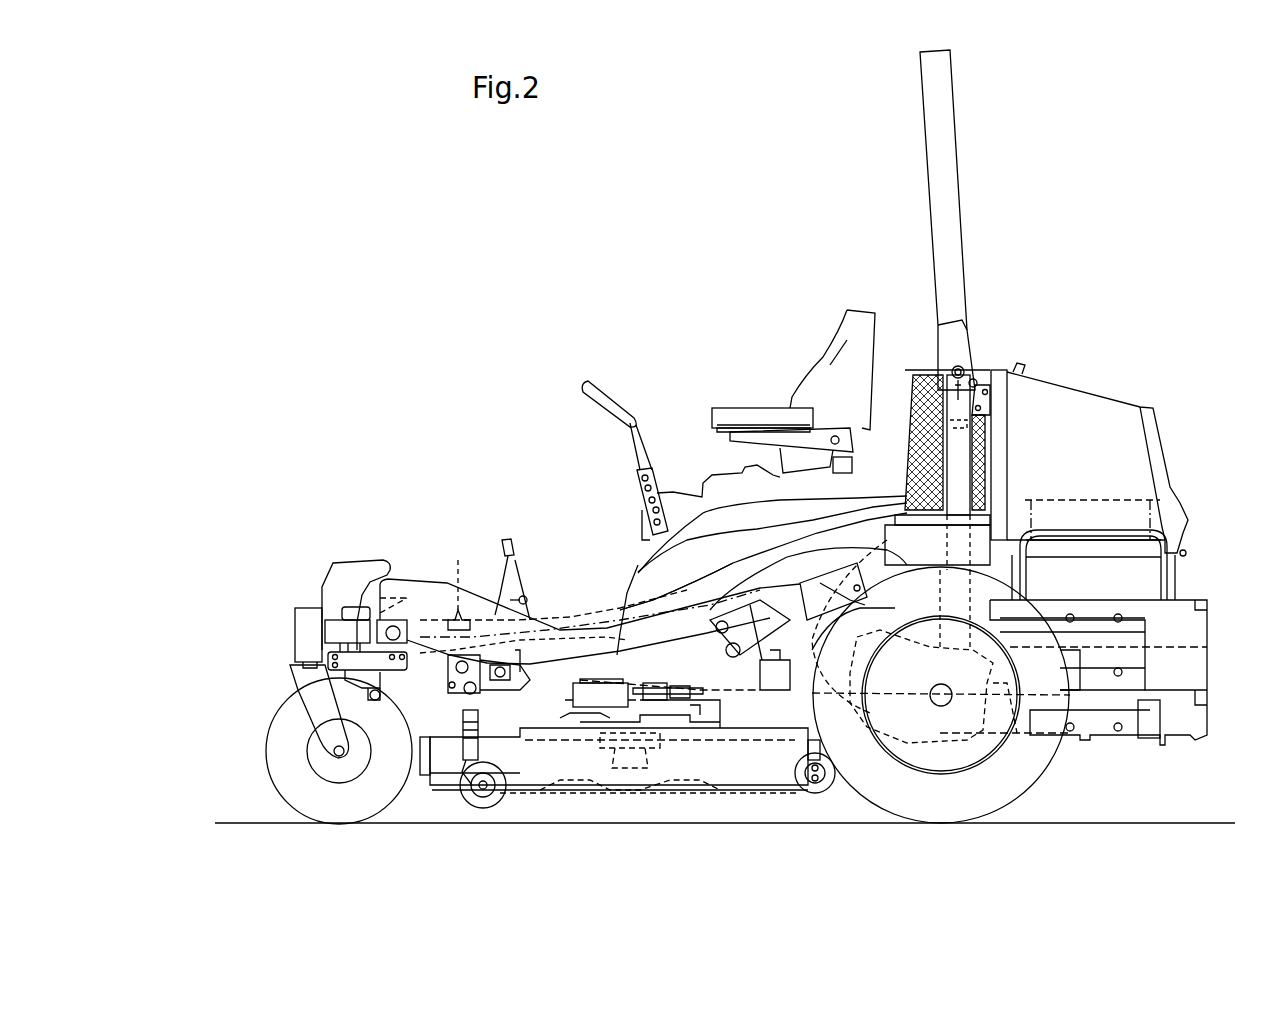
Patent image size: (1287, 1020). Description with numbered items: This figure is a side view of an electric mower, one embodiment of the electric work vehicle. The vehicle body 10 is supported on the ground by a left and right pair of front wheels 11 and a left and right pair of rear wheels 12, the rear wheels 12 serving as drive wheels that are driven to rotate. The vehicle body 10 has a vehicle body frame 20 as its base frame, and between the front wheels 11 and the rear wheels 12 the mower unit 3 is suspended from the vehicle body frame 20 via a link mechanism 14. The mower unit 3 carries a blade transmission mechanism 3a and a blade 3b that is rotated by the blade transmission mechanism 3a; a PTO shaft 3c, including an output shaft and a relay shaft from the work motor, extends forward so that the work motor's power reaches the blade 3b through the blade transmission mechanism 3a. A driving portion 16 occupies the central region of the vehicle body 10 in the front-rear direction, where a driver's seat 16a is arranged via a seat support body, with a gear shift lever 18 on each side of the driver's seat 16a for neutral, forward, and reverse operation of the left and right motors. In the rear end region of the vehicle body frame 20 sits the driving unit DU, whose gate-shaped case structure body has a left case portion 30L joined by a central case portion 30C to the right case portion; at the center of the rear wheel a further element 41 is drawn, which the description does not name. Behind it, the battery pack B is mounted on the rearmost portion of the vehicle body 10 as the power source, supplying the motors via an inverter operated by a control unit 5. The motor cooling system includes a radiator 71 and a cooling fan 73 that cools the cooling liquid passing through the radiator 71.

The mower unit 3 is at (713, 795).
The blade transmission mechanism 3a is at (600, 690).
The blade 3b is at (578, 792).
The PTO shaft 3c is at (703, 695).
The control unit 5 is at (1123, 503).
The vehicle body 10 is at (428, 563).
The front wheels 11 is at (265, 762).
The rear wheels 12 is at (1060, 742).
The link mechanism 14 is at (445, 697).
The driving portion 16 is at (590, 355).
The driver's seat 16a is at (835, 365).
The gear shift lever 18 is at (597, 412).
The vehicle body frame 20 is at (458, 560).
The central case portion 30C is at (840, 612).
The left case portion 30L is at (967, 720).
The axle 41 is at (937, 703).
The radiator 71 is at (938, 383).
The cooling fan 73 is at (988, 432).
The battery pack B is at (1143, 587).
The driving unit DU is at (690, 568).